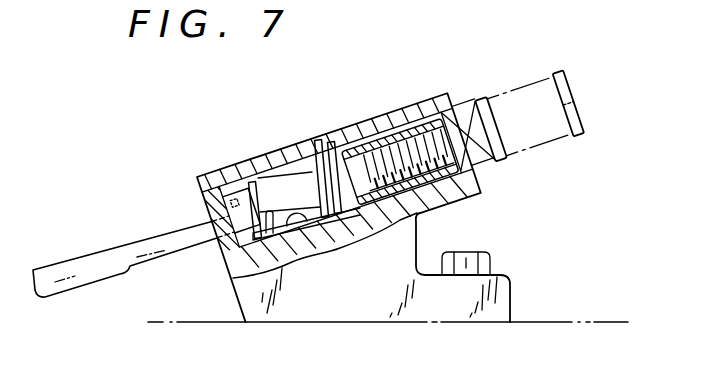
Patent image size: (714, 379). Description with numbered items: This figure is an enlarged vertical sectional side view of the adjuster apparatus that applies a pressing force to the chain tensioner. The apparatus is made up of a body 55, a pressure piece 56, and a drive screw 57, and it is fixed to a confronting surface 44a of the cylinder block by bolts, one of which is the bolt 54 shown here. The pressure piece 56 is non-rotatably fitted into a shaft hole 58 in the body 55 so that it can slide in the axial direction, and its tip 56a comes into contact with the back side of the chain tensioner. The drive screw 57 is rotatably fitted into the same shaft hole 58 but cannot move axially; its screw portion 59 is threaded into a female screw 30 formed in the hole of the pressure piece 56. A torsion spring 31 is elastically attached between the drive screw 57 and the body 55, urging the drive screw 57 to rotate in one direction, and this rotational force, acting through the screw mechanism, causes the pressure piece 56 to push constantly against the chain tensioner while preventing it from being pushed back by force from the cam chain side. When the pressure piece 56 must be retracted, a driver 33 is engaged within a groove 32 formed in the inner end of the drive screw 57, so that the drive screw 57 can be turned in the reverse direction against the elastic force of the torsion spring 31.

The female screw 30 is at (388, 212).
The torsion spring 31 is at (246, 174).
The groove 32 is at (245, 215).
The driver 33 is at (108, 246).
The confronting surface 44a is at (548, 320).
The bolt 54 is at (473, 255).
The body 55 is at (352, 130).
The pressure piece 56 is at (465, 103).
The tip 56a is at (497, 127).
The drive screw 57 is at (298, 187).
The shaft hole 58 is at (305, 214).
The screw portion 59 is at (410, 150).